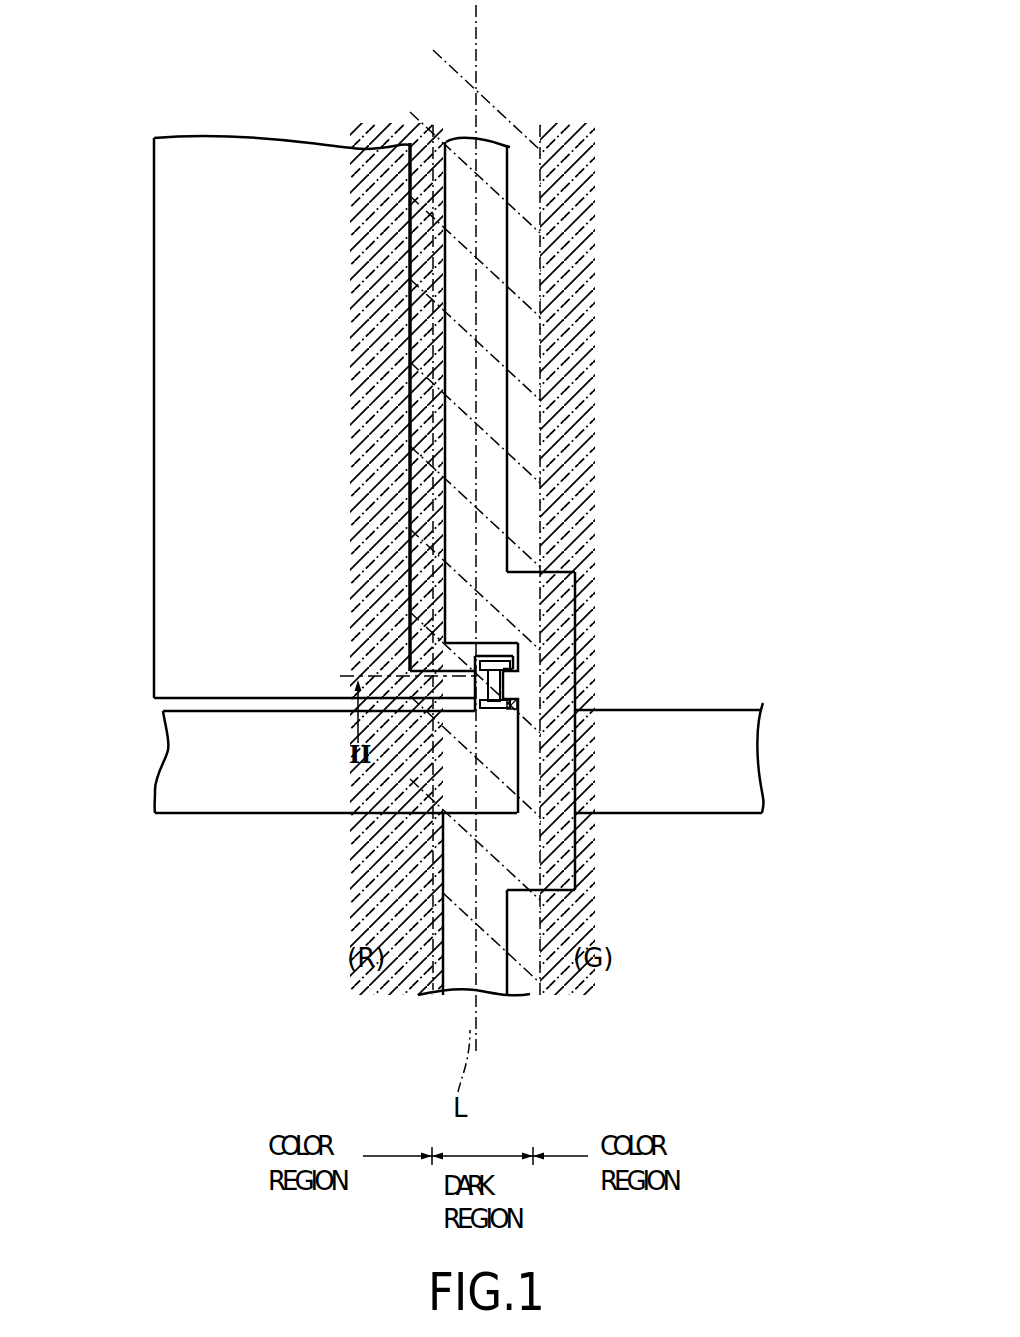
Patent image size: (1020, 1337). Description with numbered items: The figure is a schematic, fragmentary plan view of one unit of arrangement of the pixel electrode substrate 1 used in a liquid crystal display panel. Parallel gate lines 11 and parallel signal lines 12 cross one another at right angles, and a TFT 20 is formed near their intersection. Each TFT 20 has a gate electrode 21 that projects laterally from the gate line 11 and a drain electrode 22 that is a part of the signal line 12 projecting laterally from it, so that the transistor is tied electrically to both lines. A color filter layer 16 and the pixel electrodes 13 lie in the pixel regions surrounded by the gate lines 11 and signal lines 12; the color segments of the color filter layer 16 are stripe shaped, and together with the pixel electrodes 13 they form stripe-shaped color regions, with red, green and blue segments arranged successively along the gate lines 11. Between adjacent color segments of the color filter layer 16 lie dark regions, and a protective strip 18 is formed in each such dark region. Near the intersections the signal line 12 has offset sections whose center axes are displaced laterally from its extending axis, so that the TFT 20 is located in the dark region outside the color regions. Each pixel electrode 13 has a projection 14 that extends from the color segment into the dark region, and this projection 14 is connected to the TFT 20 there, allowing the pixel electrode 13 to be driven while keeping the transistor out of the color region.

The pixel electrode substrate 1 is at (658, 145).
The gate line 11 is at (662, 732).
The signal line 12 is at (487, 443).
The pixel electrode 13 is at (182, 486).
The projection 14 is at (495, 653).
The color filter layer 16 is at (418, 990).
The protective strip 18 is at (525, 1000).
The TFT 20 is at (512, 632).
The gate electrode 21 is at (517, 650).
The drain electrode 22 is at (512, 686).